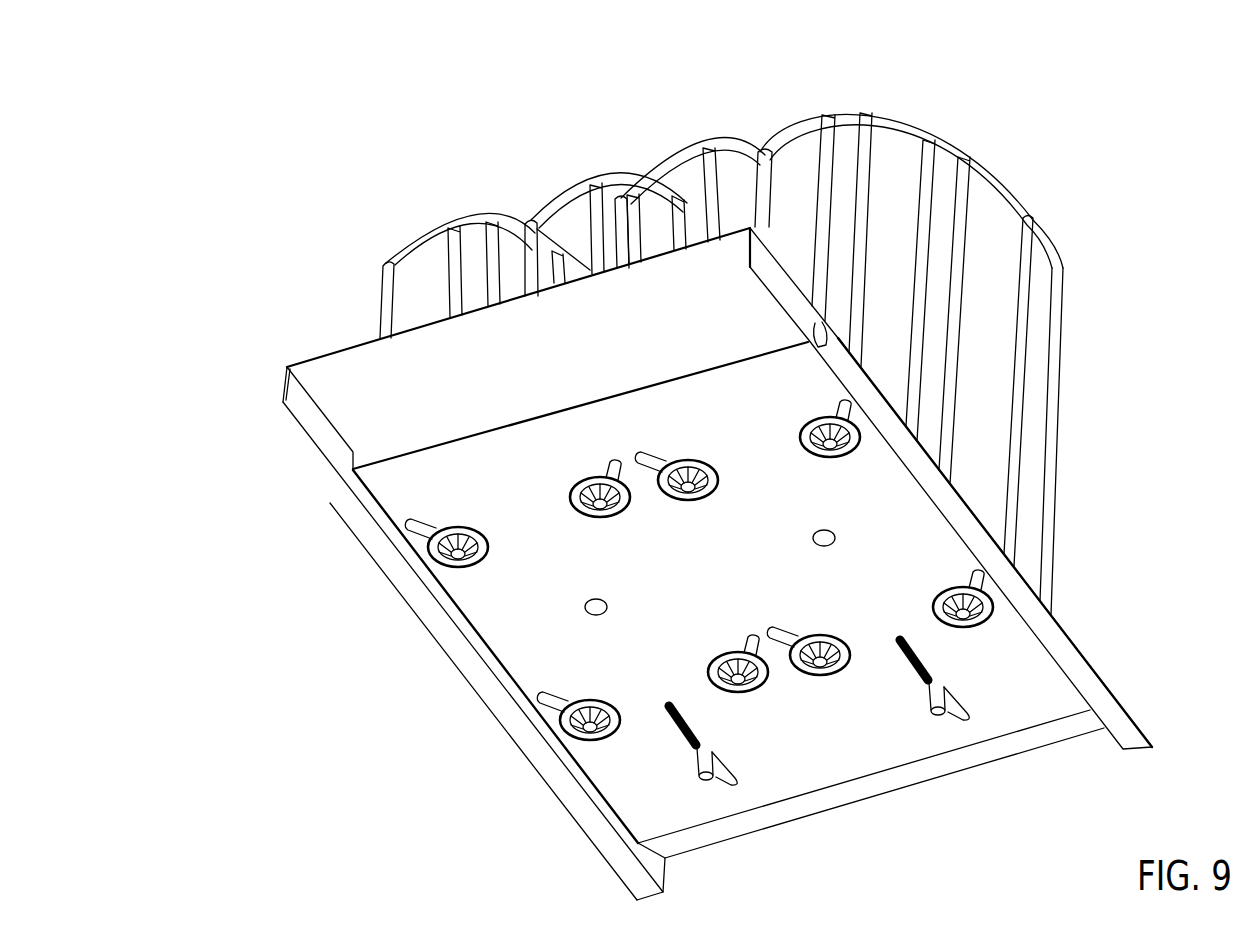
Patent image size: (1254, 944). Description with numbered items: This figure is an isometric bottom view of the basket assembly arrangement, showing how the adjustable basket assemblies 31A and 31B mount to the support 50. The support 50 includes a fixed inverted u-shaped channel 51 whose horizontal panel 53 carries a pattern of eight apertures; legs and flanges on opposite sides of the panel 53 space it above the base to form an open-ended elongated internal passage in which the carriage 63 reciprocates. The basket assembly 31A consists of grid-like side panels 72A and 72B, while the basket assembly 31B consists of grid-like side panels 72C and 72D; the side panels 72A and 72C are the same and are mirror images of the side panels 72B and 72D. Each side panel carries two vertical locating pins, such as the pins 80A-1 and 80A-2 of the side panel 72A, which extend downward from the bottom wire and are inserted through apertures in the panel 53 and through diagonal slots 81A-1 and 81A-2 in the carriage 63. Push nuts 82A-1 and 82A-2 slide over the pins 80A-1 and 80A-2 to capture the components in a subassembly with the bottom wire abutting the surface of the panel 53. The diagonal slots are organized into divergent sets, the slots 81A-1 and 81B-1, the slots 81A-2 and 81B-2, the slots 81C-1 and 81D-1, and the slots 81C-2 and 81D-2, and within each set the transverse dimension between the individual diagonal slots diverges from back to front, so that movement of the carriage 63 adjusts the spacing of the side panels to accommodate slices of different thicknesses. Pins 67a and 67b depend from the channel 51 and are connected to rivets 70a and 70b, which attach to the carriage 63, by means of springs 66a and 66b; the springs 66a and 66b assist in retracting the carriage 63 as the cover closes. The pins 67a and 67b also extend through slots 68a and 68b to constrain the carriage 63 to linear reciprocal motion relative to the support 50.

The support 50 is at (250, 393).
The inverted u-shaped channel 51 is at (330, 382).
The horizontal panel 53 is at (371, 358).
The carriage 63 is at (392, 482).
The basket assembly 31A is at (690, 85).
The basket assembly 31B is at (1015, 50).
The side panel 72A is at (466, 208).
The side panel 72B is at (591, 161).
The side panel 72C is at (722, 137).
The side panel 72D is at (992, 159).
The locating pin 80A-1 is at (460, 560).
The locating pin 80A-2 is at (590, 727).
The diagonal slot 81A-1 is at (410, 532).
The diagonal slot 81A-2 is at (541, 706).
The push nut 82A-1 is at (489, 536).
The push nut 82A-2 is at (615, 702).
The diagonal slot 81B-1 is at (608, 470).
The diagonal slot 81C-1 is at (640, 458).
The diagonal slot 81D-1 is at (838, 402).
The diagonal slot 81B-2 is at (750, 640).
The diagonal slot 81C-2 is at (807, 593).
The diagonal slot 81D-2 is at (970, 577).
The rivet 70a is at (605, 598).
The rivet 70b is at (826, 530).
The spring 66a is at (684, 732).
The pin 67a is at (697, 764).
The slot 68a is at (722, 778).
The spring 66b is at (913, 668).
The pin 67b is at (927, 697).
The slot 68b is at (952, 708).